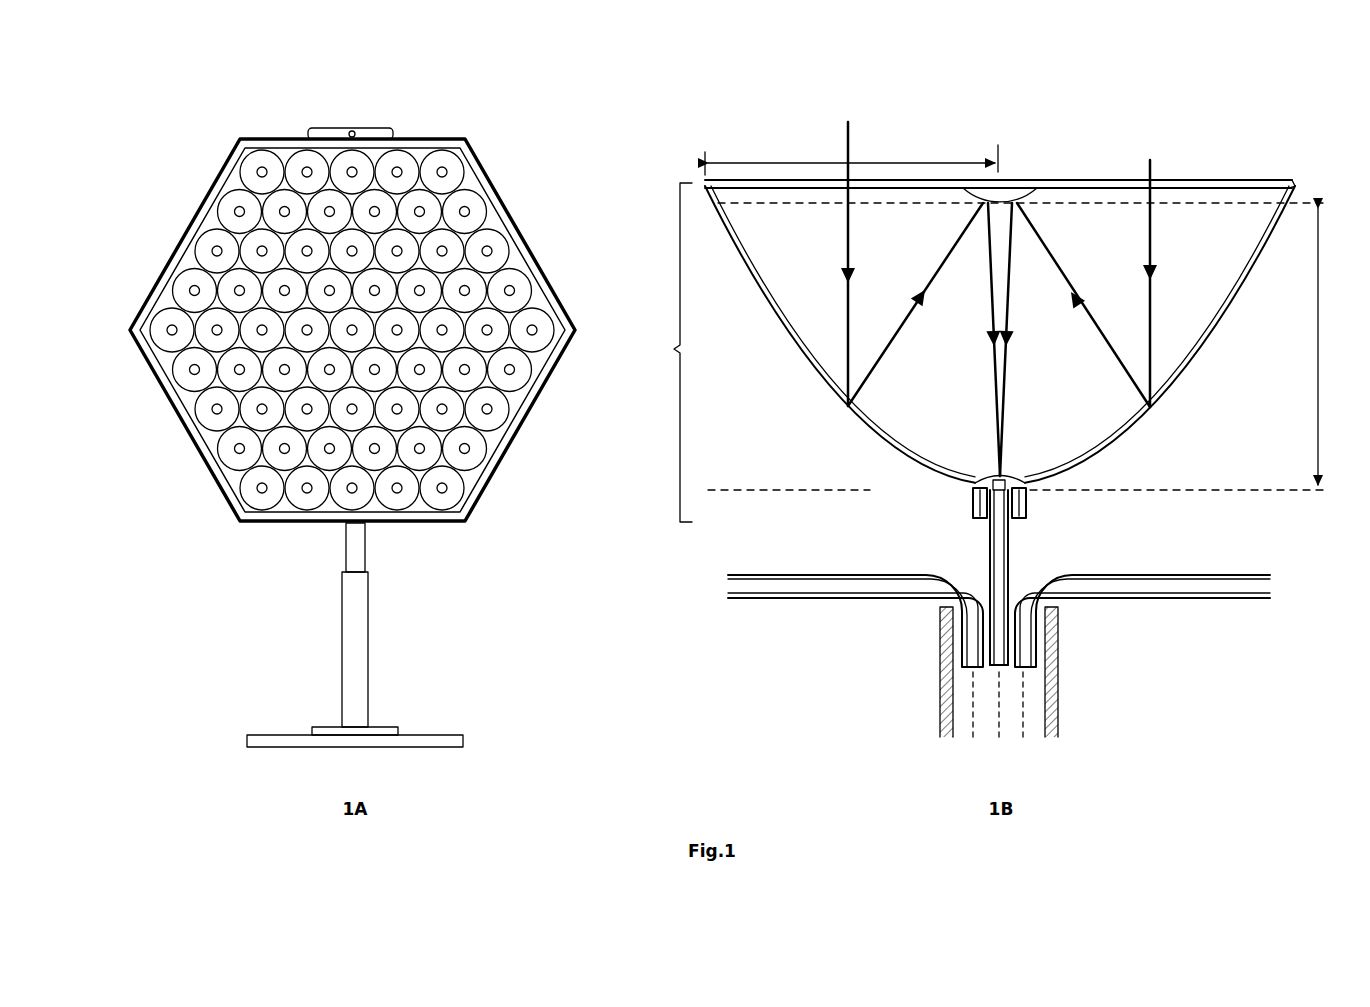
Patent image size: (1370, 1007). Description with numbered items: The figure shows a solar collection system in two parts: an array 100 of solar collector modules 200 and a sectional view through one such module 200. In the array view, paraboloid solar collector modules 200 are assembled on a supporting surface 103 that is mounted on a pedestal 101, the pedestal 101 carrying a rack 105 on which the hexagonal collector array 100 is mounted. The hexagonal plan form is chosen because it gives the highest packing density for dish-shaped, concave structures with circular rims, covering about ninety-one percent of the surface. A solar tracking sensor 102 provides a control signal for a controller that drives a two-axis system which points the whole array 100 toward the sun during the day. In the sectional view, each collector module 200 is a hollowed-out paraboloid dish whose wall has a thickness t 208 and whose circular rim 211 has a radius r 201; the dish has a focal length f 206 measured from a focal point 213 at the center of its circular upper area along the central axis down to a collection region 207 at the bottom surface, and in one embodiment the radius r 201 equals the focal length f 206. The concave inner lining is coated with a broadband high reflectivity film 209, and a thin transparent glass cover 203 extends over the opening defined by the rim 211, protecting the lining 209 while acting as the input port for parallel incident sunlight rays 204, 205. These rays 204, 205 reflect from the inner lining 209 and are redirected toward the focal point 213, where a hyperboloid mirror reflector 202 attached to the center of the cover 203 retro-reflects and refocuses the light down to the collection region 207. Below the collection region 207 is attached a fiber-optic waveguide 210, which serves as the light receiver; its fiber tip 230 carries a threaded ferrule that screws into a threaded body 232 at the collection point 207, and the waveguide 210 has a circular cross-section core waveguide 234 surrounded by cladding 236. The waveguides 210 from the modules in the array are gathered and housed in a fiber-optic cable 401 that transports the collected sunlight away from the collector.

In FIG. 1A, the array 100 is at (365, 326).
In FIG. 1A, the pedestal 101 is at (340, 650).
In FIG. 1A, the solar tracking sensor 102 is at (351, 117).
In FIG. 1A, the supporting surface 103 is at (474, 177).
In FIG. 1A, the rack 105 is at (523, 222).
In FIG. 1A, the solar collector module 200 is at (549, 329).
In FIG. 1B, the solar collector module 200 is at (964, 352).
In FIG. 1B, the radius r 201 is at (833, 158).
In FIG. 1B, the hyperboloid mirror reflector 202 is at (1005, 189).
In FIG. 1B, the transparent glass cover 203 is at (1225, 179).
In FIG. 1B, the sunlight ray 204 is at (916, 288).
In FIG. 1B, the sunlight ray 205 is at (1082, 307).
In FIG. 1B, the focal length f 206 is at (1021, 361).
In FIG. 1B, the collection region 207 is at (975, 469).
In FIG. 1B, the thickness t 208 is at (1176, 336).
In FIG. 1B, the high reflectivity film 209 is at (1115, 431).
In FIG. 1B, the fiber-optic waveguide 210 is at (985, 570).
In FIG. 1B, the circular rim 211 is at (1292, 179).
In FIG. 1B, the focal point 213 is at (995, 141).
In FIG. 1B, the fiber tip 230 is at (1022, 504).
In FIG. 1B, the threaded body 232 is at (968, 506).
In FIG. 1B, the core waveguide 234 is at (986, 540).
In FIG. 1B, the fiber tube wall 236 is at (1012, 572).
In FIG. 1B, the fiber-optic cable 401 is at (1062, 665).